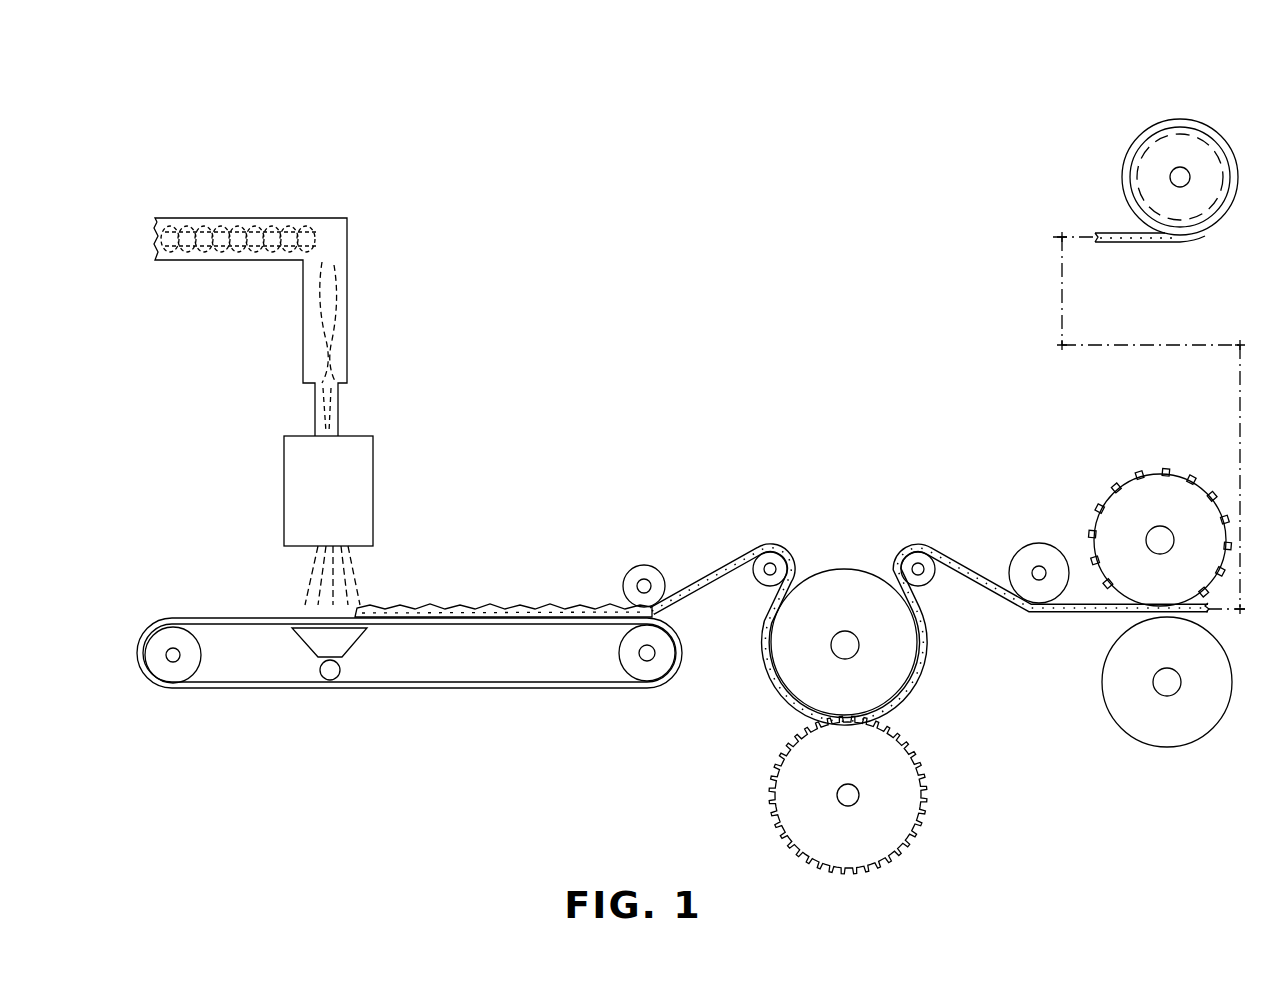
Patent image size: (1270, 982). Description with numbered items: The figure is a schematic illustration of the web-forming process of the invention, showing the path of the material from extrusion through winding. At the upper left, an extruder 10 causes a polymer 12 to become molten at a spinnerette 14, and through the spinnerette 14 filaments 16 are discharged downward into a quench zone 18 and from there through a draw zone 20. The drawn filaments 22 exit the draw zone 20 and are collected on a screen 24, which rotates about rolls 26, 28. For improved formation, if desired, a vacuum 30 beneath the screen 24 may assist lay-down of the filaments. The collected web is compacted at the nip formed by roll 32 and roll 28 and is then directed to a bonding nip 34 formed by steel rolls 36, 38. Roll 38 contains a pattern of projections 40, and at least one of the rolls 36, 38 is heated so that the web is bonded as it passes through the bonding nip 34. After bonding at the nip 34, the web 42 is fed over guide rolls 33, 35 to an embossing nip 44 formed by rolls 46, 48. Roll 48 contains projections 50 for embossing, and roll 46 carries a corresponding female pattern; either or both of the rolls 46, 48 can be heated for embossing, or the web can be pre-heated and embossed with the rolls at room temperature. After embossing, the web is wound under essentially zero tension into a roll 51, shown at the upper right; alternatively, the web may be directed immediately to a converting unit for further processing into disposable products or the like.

The extruder 10 is at (252, 200).
The polymer 12 is at (207, 265).
The spinnerette 14 is at (340, 410).
The filaments 16 is at (312, 398).
The quench zone 18 is at (316, 499).
The draw zone 20 is at (296, 578).
The drawn filaments 22 is at (352, 575).
The screen 24 is at (222, 617).
The roll 26 is at (177, 668).
The roll 28 is at (622, 640).
The vacuum 30 is at (338, 672).
The roll 32 is at (640, 566).
The guide roll 33 is at (922, 583).
The bonding nip 34 is at (792, 721).
The guide roll 35 is at (1012, 558).
The steel roll 36 is at (857, 615).
The steel roll 38 is at (836, 843).
The projections 40 is at (877, 870).
The web 42 is at (1095, 613).
The embossing nip 44 is at (1097, 588).
The roll 46 is at (1149, 656).
The roll 48 is at (1146, 511).
The projections 50 is at (1167, 472).
The roll 51 is at (1150, 123).